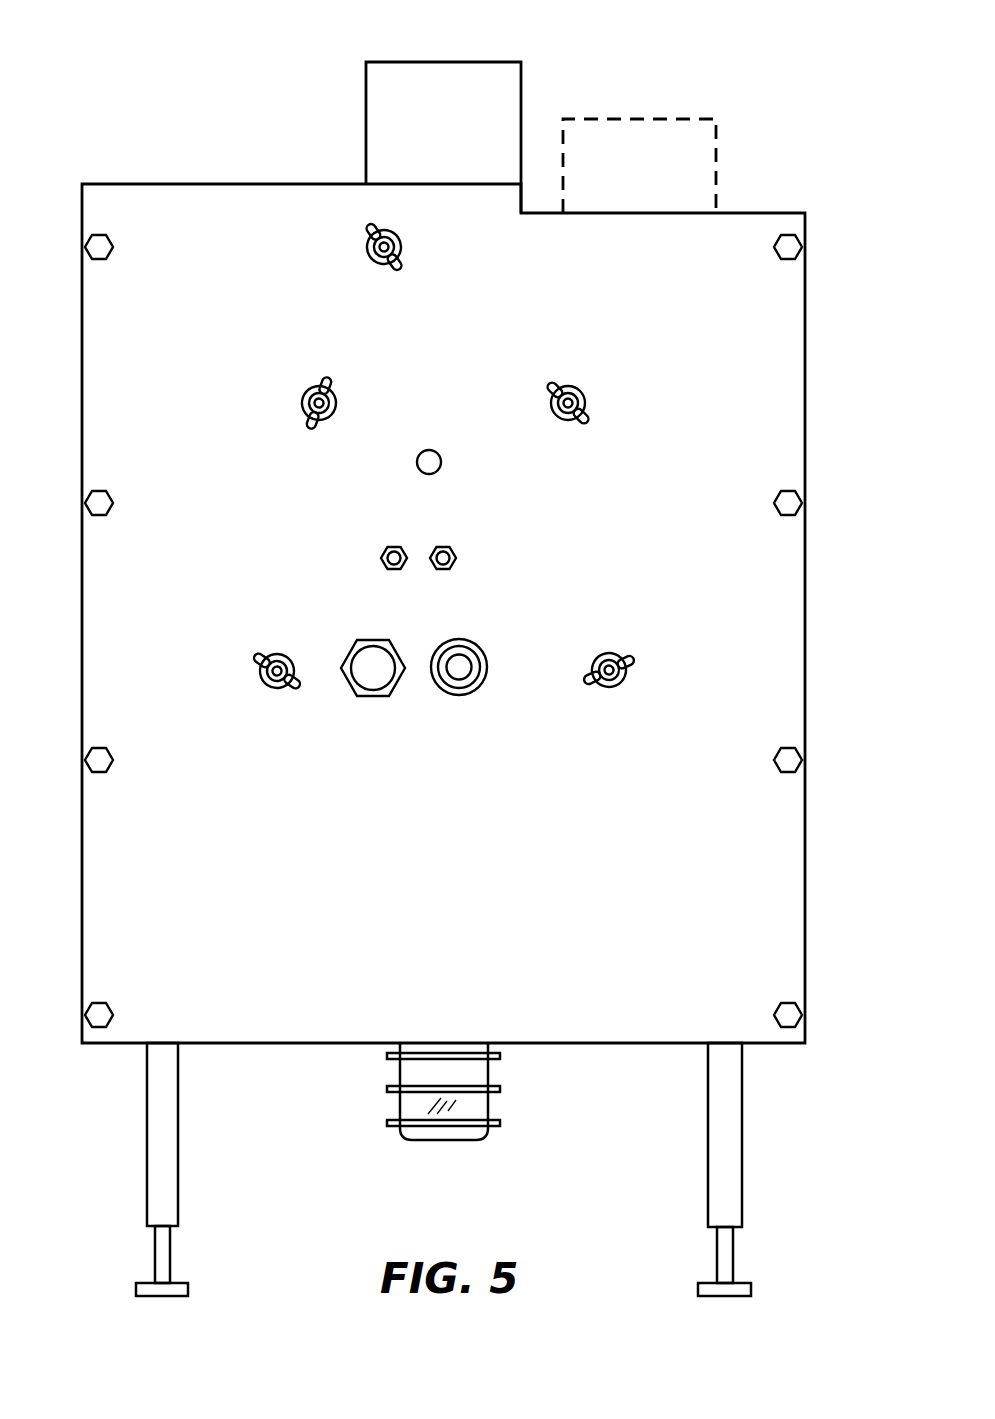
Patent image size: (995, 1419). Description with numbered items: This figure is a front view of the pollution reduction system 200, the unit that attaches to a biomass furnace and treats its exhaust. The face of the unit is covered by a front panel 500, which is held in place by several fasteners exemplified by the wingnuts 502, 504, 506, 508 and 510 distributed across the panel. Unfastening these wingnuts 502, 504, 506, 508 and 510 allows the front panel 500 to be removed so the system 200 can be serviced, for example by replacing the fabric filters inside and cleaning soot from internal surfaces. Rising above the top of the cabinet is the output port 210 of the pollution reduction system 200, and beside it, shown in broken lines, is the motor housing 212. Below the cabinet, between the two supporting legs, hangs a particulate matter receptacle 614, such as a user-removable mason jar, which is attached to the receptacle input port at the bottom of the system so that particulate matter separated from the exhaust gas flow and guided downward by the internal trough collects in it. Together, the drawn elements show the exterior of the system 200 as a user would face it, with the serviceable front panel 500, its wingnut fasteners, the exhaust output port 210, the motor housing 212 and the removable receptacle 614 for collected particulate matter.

The pollution reduction system 200 is at (171, 112).
The output port 210 is at (366, 137).
The motor housing 212 is at (716, 125).
The front panel 500 is at (221, 940).
The wingnut 502 is at (272, 690).
The wingnut 504 is at (614, 690).
The wingnut 506 is at (381, 556).
The wingnut 508 is at (456, 556).
The wingnut 510 is at (780, 493).
The particulate matter receptacle 614 is at (484, 1136).